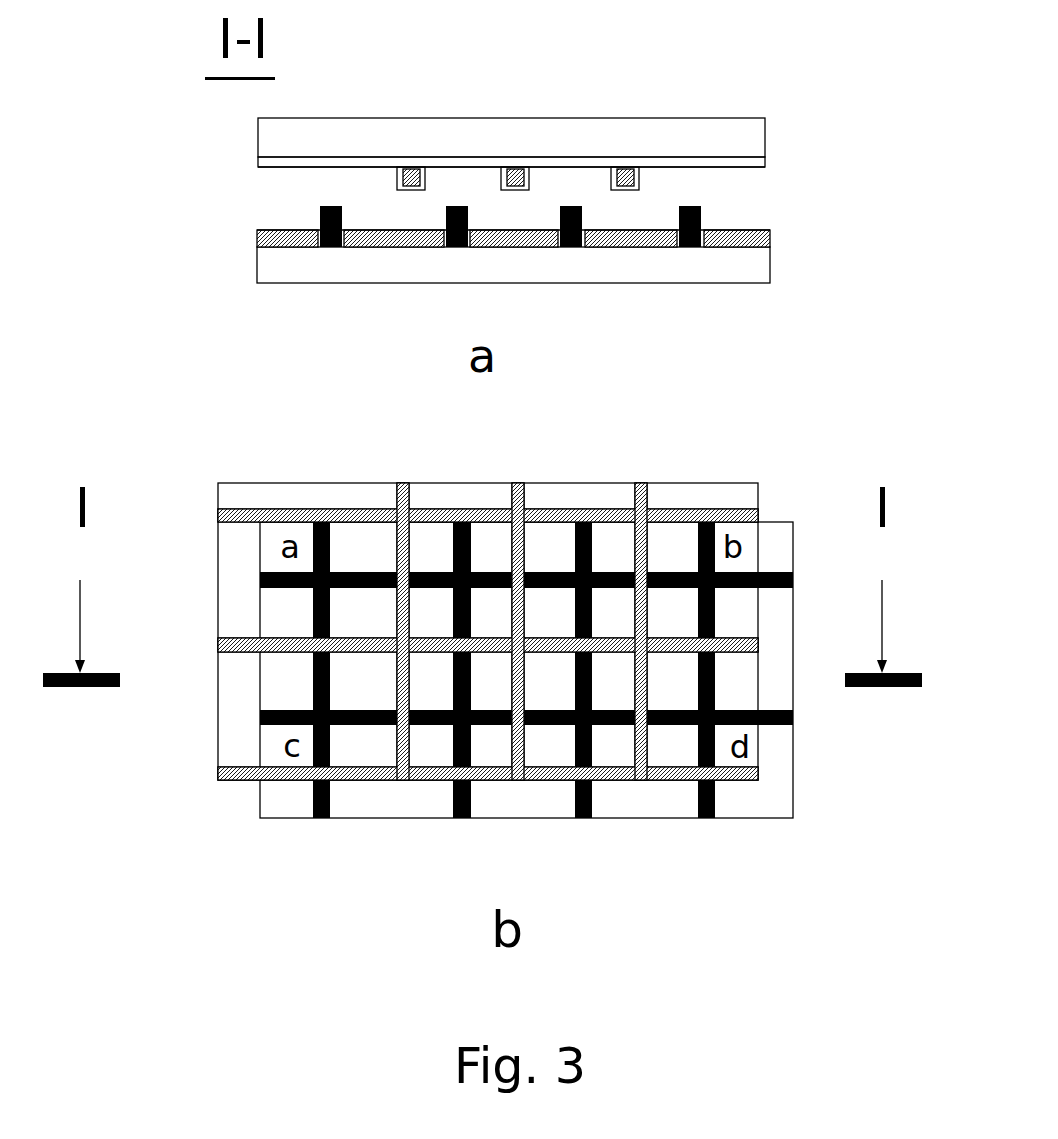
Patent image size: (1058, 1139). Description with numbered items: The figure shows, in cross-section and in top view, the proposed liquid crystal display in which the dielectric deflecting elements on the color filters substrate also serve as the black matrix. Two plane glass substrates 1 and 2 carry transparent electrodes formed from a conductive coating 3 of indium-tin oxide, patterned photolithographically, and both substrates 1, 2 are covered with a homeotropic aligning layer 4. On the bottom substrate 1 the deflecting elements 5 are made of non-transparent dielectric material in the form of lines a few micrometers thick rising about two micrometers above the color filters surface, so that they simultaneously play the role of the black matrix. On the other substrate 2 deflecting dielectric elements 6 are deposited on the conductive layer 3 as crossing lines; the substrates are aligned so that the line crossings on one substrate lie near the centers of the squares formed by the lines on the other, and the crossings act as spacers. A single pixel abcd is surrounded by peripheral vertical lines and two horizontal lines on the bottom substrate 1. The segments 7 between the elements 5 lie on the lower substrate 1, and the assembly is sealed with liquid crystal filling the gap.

The glass substrate 1 is at (268, 268).
The glass substrate 2 is at (277, 142).
The conductive coating 3 is at (768, 230).
The homeotropic aligning layer 4 is at (257, 230).
The deflecting element 5 is at (713, 248).
The deflecting dielectric element 6 is at (418, 167).
The pixel electrode segments 7 is at (410, 235).